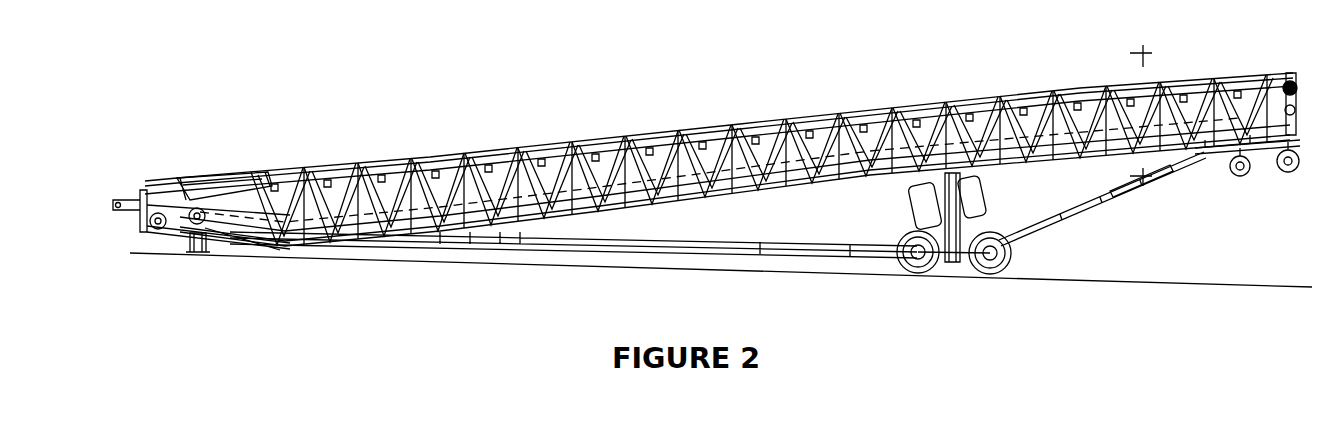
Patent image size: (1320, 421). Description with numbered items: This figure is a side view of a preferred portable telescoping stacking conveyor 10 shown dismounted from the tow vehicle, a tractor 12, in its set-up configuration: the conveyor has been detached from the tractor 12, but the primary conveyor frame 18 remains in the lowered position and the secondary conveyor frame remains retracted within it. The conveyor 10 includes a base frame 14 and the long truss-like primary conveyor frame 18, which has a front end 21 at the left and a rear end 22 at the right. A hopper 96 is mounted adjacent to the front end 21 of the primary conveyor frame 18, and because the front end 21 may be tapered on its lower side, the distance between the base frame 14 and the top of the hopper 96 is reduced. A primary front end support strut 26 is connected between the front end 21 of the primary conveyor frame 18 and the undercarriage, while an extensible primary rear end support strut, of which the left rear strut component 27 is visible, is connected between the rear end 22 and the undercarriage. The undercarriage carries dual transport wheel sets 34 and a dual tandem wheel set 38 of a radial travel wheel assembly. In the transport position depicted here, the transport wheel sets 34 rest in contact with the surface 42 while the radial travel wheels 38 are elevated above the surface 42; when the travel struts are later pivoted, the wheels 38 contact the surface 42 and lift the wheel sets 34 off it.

The portable telescoping stacking conveyor 10 is at (719, 151).
The tractor 12 is at (1142, 53).
The base frame 14 is at (186, 246).
The primary conveyor frame 18 is at (389, 163).
The front end 21 is at (199, 166).
The rear end 22 is at (1249, 53).
The primary front end support strut 26 is at (677, 228).
The left rear strut component 27 is at (1104, 212).
The dual transport wheel sets 34 is at (1026, 253).
The dual tandem wheel set 38 is at (990, 196).
The surface 42 is at (1106, 289).
The hopper 96 is at (199, 168).